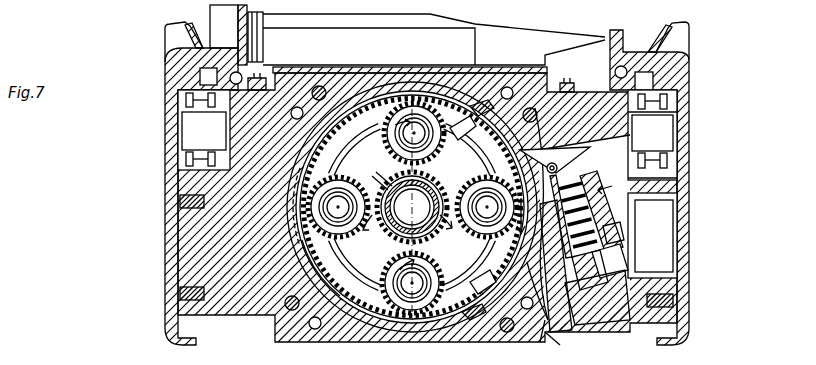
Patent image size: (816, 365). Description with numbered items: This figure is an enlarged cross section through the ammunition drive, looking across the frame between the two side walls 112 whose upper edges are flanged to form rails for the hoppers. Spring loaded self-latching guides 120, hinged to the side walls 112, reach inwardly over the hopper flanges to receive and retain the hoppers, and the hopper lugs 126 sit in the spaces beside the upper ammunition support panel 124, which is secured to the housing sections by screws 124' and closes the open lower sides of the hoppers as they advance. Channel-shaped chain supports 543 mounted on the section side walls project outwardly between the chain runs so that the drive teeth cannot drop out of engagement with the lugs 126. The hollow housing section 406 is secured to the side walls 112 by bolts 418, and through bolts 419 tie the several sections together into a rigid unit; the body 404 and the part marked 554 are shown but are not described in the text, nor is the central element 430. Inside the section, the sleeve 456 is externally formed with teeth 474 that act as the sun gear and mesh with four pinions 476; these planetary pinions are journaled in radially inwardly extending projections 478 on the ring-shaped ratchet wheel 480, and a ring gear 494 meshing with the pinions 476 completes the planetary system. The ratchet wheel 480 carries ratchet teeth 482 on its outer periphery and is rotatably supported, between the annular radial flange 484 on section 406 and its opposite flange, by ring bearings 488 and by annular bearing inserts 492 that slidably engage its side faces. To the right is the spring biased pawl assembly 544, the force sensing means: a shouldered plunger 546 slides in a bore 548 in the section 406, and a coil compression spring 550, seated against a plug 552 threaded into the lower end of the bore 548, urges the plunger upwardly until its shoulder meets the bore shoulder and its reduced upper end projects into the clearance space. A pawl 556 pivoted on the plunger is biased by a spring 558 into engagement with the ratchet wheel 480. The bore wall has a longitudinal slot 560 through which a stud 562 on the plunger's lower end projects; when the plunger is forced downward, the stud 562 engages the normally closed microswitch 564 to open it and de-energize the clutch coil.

The spring loaded self-latching guide 120 is at (166, 38).
The lug 126 is at (205, 80).
The channel-shaped chain support 543 is at (183, 127).
The bearing race 554 is at (633, 118).
The spring biased pawl assembly 544 is at (661, 183).
The bore 548 is at (586, 212).
The stud 562 is at (613, 234).
The longitudinal slot 560 is at (607, 254).
The coil compression spring 550 is at (603, 268).
The microswitch 564 is at (669, 265).
The side wall 112 is at (165, 279).
The bolt 418 is at (168, 226).
The plug 552 is at (618, 332).
The hollow section 406 is at (552, 338).
The through bolt 419 is at (320, 88).
The annular radial flange 484 is at (491, 343).
The frame body 404 is at (352, 343).
The pinion 476 is at (414, 102).
The ring bearing 488 is at (468, 137).
The annular bearing insert 492 is at (488, 118).
The teeth 474 is at (378, 170).
The sleeve 456 is at (412, 207).
The sun gear 430 is at (414, 223).
The ratchet teeth 482 is at (538, 246).
The ratchet wheel 480 is at (478, 266).
The projection 478 is at (300, 240).
The ring gear 494 is at (302, 270).
The ammunition support panel 124 is at (407, 39).
The screw 124' is at (424, 66).
The shouldered plunger 546 is at (576, 178).
The pawl 556 is at (553, 165).
The spring 558 is at (552, 138).